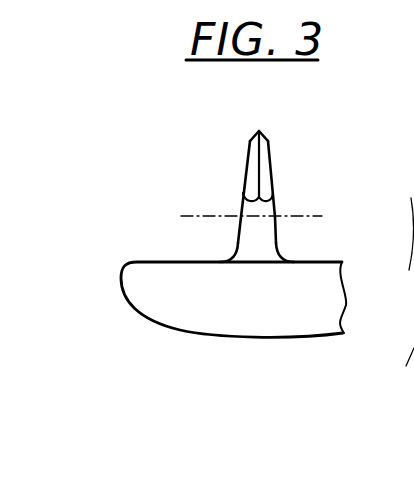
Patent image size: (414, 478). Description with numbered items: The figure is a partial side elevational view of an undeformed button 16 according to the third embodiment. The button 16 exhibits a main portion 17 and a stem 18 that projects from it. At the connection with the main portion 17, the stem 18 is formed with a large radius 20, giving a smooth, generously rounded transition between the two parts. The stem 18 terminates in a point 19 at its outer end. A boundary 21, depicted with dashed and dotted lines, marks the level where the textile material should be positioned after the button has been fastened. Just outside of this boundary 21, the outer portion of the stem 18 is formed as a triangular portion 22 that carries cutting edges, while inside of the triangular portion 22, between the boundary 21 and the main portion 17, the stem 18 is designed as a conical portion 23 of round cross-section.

The button 16 is at (413, 126).
The main portion 17 is at (308, 300).
The stem 18 is at (277, 228).
The point 19 is at (258, 130).
The large radius 20 is at (222, 261).
The boundary 21 is at (212, 213).
The triangular portion 22 is at (253, 164).
The conical portion 23 is at (238, 239).